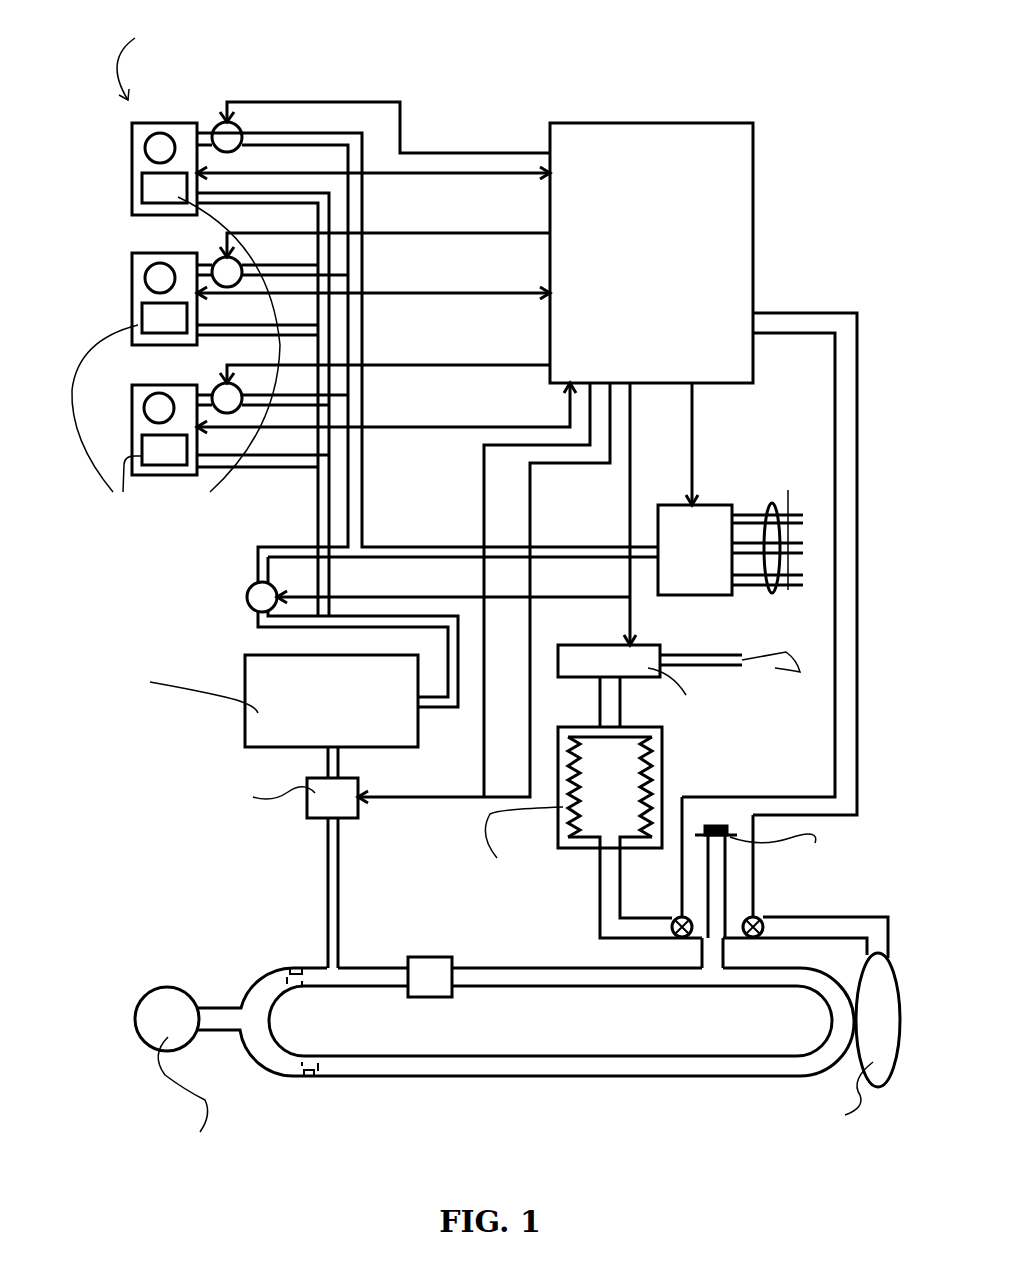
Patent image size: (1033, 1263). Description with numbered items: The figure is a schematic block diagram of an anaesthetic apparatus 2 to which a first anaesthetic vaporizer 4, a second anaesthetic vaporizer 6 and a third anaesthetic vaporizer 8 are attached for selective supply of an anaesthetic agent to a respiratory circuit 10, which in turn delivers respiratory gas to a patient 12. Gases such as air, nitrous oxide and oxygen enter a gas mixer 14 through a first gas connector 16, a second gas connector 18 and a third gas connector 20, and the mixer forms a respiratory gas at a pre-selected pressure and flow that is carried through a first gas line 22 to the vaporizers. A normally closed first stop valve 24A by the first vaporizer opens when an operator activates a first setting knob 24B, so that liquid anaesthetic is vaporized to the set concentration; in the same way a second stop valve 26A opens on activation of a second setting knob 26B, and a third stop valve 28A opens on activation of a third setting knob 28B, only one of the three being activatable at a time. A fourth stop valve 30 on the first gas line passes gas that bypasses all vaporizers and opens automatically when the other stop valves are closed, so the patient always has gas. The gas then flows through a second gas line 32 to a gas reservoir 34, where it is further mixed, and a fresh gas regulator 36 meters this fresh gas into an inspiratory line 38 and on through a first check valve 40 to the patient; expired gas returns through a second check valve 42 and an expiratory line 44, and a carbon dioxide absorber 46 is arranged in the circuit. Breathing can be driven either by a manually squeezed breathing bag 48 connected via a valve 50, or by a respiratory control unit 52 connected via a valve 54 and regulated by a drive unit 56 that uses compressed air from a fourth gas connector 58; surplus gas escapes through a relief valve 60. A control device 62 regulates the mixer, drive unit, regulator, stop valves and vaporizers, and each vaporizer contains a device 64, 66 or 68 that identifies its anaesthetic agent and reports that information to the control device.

The anaesthetic apparatus 2 is at (441, 100).
The first anaesthetic vaporizer 4 is at (132, 180).
The second anaesthetic vaporizer 6 is at (138, 325).
The third anaesthetic vaporizer 8 is at (138, 455).
The respiratory circuit 10 is at (207, 948).
The patient 12 is at (189, 1073).
The gas mixer 14 is at (724, 494).
The first gas connector 16 is at (722, 517).
The second gas connector 18 is at (770, 533).
The third gas connector 20 is at (780, 597).
The first gas line 22 is at (363, 221).
The first stop valve 24A is at (217, 123).
The first setting knob 24B is at (145, 148).
The second stop valve 26A is at (217, 258).
The second setting knob 26B is at (145, 278).
The third stop valve 28A is at (217, 385).
The third setting knob 28B is at (144, 408).
The fourth stop valve 30 is at (246, 597).
The second gas line 32 is at (318, 497).
The gas reservoir 34 is at (247, 686).
The fresh gas regulator 36 is at (231, 789).
The inspiratory line 38 is at (370, 968).
The first check valve 40 is at (287, 969).
The second check valve 42 is at (312, 1078).
The expiratory line 44 is at (446, 1078).
The carbon dioxide absorber 46 is at (430, 977).
The breathing bag 48 is at (801, 1059).
The valve 50 is at (763, 917).
The respiratory control unit 52 is at (665, 776).
The valve 54 is at (663, 913).
The drive unit 56 is at (665, 686).
The fourth gas connector 58 is at (725, 670).
The relief valve 60 is at (720, 828).
The control device 62 is at (651, 253).
The device for identifying the anaesthetic agent 64 is at (164, 189).
The device for identifying the anaesthetic agent 66 is at (164, 319).
The device for identifying the anaesthetic agent 68 is at (164, 451).